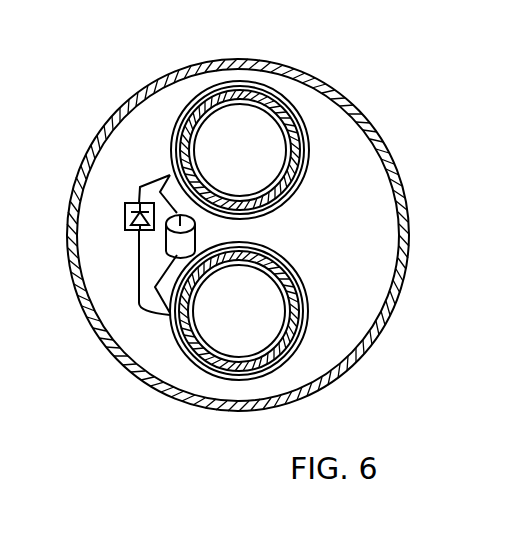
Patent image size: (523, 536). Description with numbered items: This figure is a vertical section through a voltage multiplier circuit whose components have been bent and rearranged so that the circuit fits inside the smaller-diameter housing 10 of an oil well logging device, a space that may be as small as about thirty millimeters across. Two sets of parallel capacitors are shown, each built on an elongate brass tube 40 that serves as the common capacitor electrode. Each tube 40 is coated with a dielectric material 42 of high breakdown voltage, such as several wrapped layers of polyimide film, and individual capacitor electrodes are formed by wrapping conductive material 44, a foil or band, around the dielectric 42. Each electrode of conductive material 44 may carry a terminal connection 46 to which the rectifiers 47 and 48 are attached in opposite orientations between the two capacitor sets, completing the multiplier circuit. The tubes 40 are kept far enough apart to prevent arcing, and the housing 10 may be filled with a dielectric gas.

The housing 10 is at (395, 162).
The brass tube 40 is at (193, 356).
The dielectric material 42 is at (217, 372).
The conductive material 44 is at (243, 380).
The terminal connection 46 is at (170, 315).
The rectifier 47 is at (168, 250).
The rectifier 48 is at (125, 220).